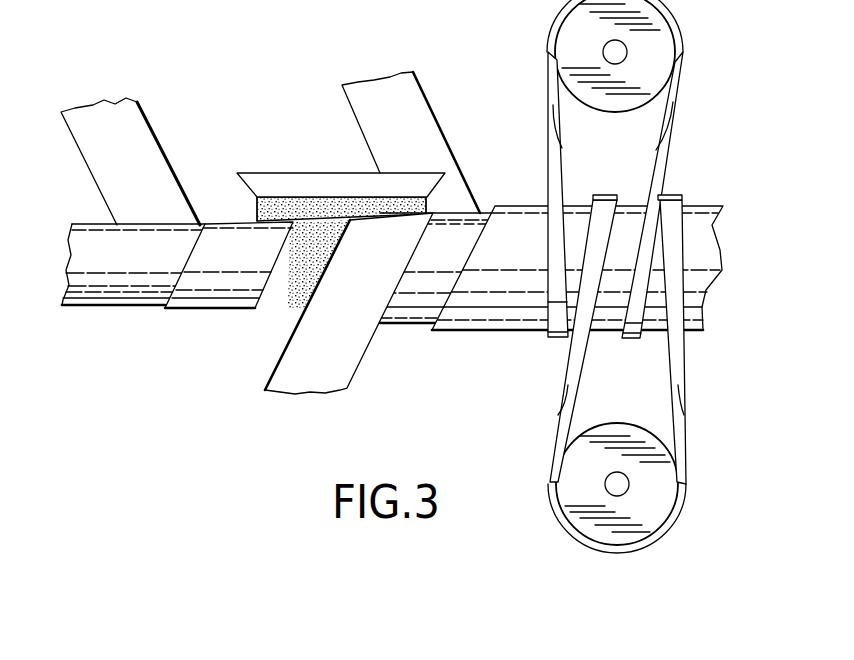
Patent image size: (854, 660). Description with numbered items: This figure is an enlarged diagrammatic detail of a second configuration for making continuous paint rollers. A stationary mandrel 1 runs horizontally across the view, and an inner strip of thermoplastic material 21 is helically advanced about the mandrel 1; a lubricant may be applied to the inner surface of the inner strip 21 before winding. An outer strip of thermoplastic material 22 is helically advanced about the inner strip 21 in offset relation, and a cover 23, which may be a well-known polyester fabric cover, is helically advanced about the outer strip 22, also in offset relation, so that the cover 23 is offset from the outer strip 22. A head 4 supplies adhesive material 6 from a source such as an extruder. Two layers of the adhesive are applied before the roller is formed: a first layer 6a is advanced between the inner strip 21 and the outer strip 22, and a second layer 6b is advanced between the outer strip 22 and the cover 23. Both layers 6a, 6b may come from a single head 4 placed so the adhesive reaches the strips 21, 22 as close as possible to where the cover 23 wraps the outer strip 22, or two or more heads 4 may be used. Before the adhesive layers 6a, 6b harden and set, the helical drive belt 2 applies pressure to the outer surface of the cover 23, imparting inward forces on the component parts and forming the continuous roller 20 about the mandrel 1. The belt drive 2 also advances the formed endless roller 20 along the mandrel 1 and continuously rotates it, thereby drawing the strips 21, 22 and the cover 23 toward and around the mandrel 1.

The mandrel 1 is at (82, 284).
The helical drive belt 2 is at (553, 150).
The head 4 is at (283, 185).
The adhesive material 6 is at (322, 212).
The first layer of adhesive material 6a is at (257, 200).
The second layer of adhesive material 6b is at (426, 204).
The roller 20 is at (700, 207).
The inner strip of thermoplastic material 21 is at (130, 128).
The outer strip of thermoplastic material 22 is at (347, 362).
The cover 23 is at (418, 110).